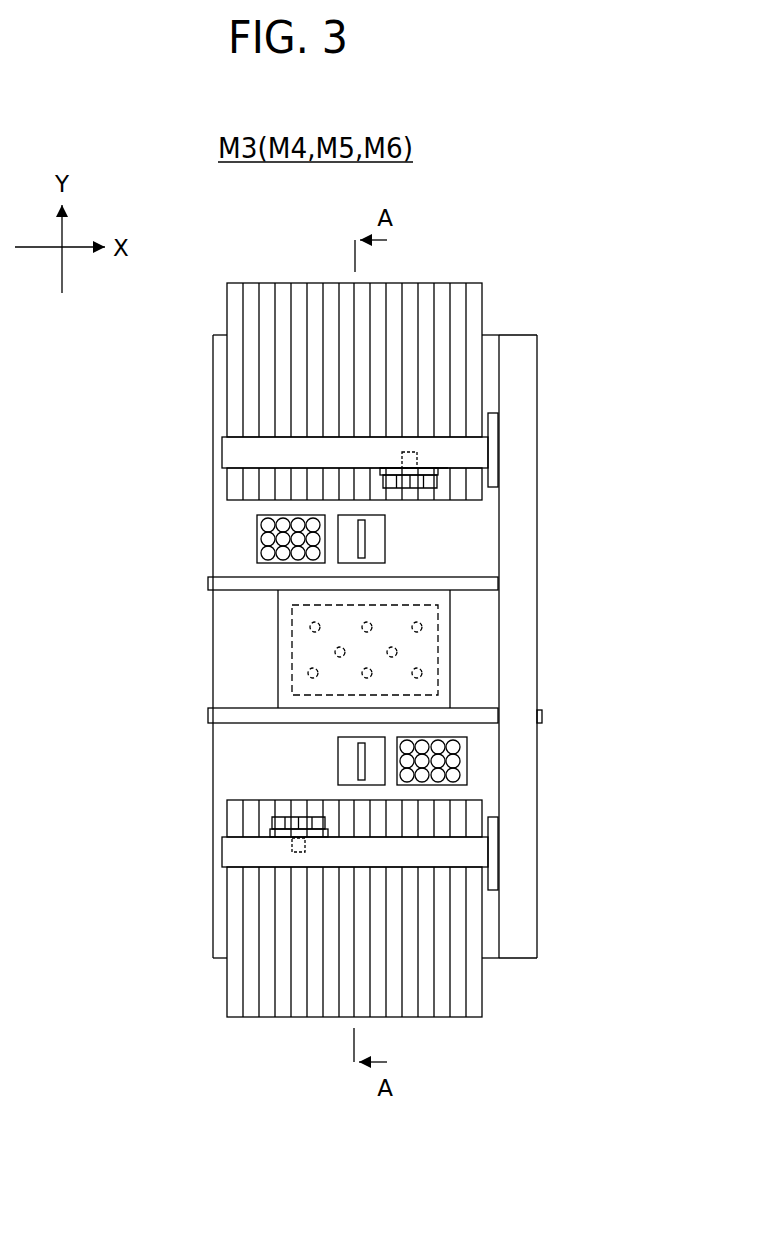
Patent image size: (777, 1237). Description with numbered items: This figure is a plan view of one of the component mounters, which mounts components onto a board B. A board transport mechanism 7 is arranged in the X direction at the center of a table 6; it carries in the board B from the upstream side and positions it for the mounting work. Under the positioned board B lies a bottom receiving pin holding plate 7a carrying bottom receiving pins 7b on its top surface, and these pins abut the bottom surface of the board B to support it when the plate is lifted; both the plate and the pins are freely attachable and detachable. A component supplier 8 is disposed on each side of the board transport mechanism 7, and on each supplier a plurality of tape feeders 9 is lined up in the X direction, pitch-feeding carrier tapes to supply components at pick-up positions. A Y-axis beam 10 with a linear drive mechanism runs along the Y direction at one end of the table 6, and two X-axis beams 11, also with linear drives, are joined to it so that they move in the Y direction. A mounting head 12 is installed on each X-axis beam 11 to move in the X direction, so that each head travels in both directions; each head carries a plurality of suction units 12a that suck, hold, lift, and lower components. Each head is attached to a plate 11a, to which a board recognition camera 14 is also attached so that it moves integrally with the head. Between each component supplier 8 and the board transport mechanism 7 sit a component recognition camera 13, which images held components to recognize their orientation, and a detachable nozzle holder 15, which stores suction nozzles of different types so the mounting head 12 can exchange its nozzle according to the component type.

The table 6 is at (235, 565).
The board transport mechanism 7 is at (237, 583).
The bottom receiving pin holding plate 7a is at (438, 633).
The bottom receiving pins 7b is at (373, 672).
The component supplier 8 is at (463, 262).
The tape feeders 9 is at (235, 295).
The Y-axis beam 10 is at (522, 477).
The X-axis beams 11 is at (478, 457).
The plate 11a is at (430, 472).
The mounting head 12 is at (439, 463).
The suction units 12a is at (402, 483).
The component recognition camera 13 is at (375, 533).
The board recognition camera 14 is at (409, 452).
The nozzle holder 15 is at (258, 530).
The board B is at (452, 698).